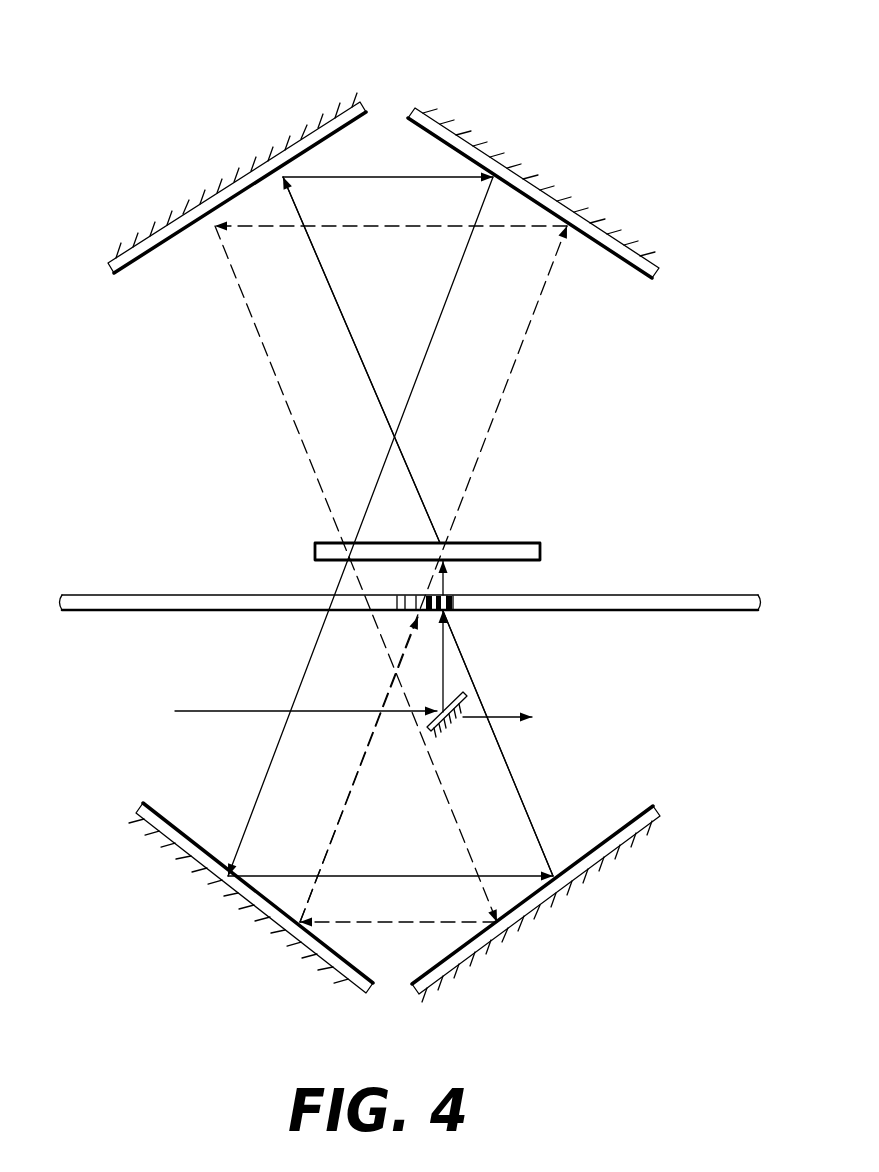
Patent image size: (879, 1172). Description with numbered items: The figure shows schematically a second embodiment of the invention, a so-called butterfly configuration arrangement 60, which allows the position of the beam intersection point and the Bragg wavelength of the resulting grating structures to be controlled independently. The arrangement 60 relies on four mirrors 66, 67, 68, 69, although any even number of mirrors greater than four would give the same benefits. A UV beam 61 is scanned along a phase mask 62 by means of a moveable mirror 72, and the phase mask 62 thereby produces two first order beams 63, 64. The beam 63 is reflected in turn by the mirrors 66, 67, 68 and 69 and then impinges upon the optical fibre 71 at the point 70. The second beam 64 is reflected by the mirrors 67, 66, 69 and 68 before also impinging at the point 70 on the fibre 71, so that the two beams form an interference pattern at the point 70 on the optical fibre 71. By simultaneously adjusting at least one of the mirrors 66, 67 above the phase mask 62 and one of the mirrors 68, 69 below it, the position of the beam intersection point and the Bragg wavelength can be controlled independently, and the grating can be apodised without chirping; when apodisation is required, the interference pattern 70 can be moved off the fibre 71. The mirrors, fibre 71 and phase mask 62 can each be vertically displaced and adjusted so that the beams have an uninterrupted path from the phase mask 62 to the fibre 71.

The butterfly configuration arrangement 60 is at (627, 135).
The UV beam 61 is at (456, 584).
The phase mask 62 is at (490, 543).
The first order beam 63 is at (508, 368).
The second first order beam 64 is at (327, 277).
The mirror 66 is at (640, 278).
The mirror 67 is at (133, 272).
The mirror 68 is at (634, 810).
The mirror 69 is at (150, 803).
The beam intersection point 70 is at (455, 614).
The optical fibre 71 is at (713, 607).
The moveable mirror 72 is at (437, 730).